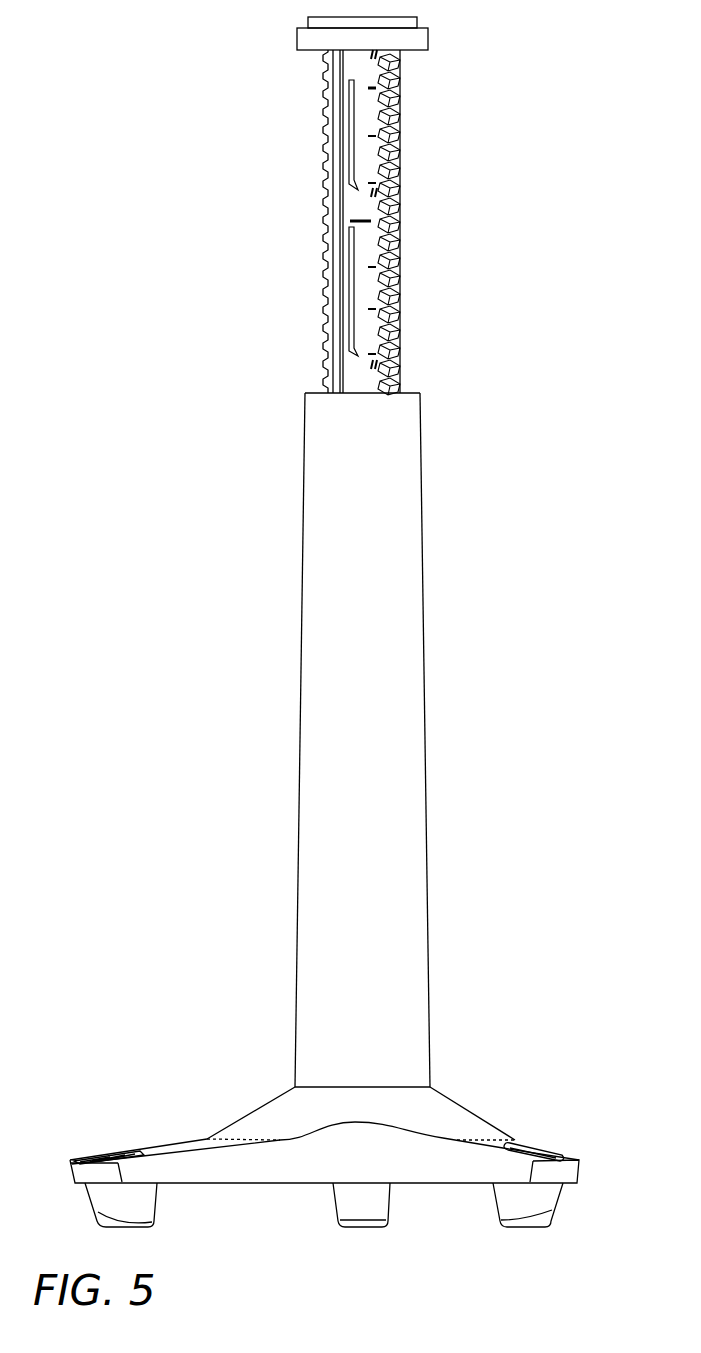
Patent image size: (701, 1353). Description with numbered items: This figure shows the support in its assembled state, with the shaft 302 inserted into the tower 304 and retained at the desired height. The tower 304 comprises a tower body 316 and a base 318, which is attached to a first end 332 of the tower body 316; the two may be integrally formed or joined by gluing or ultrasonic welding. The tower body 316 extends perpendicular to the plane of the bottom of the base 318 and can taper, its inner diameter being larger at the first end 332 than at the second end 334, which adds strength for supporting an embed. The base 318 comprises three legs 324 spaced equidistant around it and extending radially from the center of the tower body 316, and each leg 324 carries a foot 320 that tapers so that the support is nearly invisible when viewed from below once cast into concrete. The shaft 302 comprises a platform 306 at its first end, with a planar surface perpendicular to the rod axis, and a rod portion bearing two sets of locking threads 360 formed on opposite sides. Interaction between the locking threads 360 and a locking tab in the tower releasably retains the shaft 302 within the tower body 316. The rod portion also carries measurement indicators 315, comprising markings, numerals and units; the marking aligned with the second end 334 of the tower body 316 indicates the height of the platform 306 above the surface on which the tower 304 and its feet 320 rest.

The shaft 302 is at (167, 200).
The platform 306 is at (297, 41).
The measurement indicators 315 is at (352, 381).
The locking threads 360 is at (399, 215).
The second end of the tower body 334 is at (260, 400).
The tower 304 is at (192, 743).
The tower body 316 is at (420, 734).
The first end of the tower body 332 is at (223, 1068).
The legs 324 is at (192, 1140).
The base 318 is at (408, 1148).
The feet 320 is at (148, 1203).